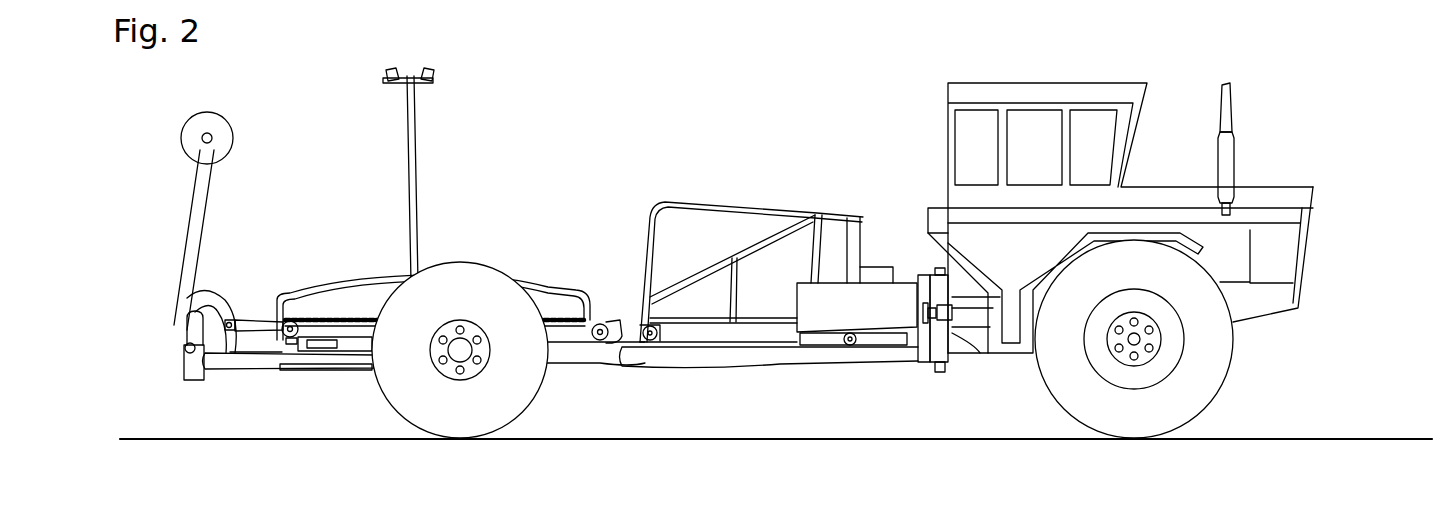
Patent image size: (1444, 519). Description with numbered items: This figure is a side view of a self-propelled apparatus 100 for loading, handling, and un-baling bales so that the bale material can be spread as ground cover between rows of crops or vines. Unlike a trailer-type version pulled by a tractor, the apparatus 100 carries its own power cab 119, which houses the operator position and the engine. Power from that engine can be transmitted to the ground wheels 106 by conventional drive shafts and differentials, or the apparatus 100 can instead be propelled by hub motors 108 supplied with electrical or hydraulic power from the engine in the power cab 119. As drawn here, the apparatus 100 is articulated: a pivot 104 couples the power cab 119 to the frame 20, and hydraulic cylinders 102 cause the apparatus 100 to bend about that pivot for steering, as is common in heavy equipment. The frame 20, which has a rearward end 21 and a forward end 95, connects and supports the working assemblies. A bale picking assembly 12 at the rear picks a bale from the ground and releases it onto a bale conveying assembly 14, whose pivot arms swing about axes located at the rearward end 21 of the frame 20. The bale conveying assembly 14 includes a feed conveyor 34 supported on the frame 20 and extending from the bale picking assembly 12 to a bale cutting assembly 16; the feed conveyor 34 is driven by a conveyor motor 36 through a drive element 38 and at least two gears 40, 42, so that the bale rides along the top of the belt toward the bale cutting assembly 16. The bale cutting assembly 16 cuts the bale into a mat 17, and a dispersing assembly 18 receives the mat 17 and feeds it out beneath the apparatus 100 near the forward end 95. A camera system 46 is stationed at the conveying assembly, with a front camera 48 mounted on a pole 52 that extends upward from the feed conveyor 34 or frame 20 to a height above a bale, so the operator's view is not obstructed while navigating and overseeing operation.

The apparatus 100 is at (627, 80).
The bale picking assembly 12 is at (253, 120).
The bale conveying assembly 14 is at (523, 137).
The bale cutting assembly 16 is at (745, 150).
The mat 17 is at (1120, 176).
The dispersing assembly 18 is at (888, 218).
The frame 20 is at (697, 352).
The rearward end 21 is at (227, 369).
The feed conveyor 34 is at (350, 332).
The conveyor motor 36 is at (553, 308).
The drive element 38 is at (280, 342).
The gear 40 is at (292, 320).
The gear 42 is at (600, 342).
The camera system 46 is at (407, 222).
The front camera 48 is at (383, 85).
The pole 52 is at (415, 178).
The forward end 95 is at (898, 347).
The hydraulic cylinders 102 is at (937, 320).
The pivot 104 is at (957, 337).
The ground wheels 106 is at (400, 382).
The hub motors 108 is at (475, 357).
The power cab 119 is at (1147, 83).